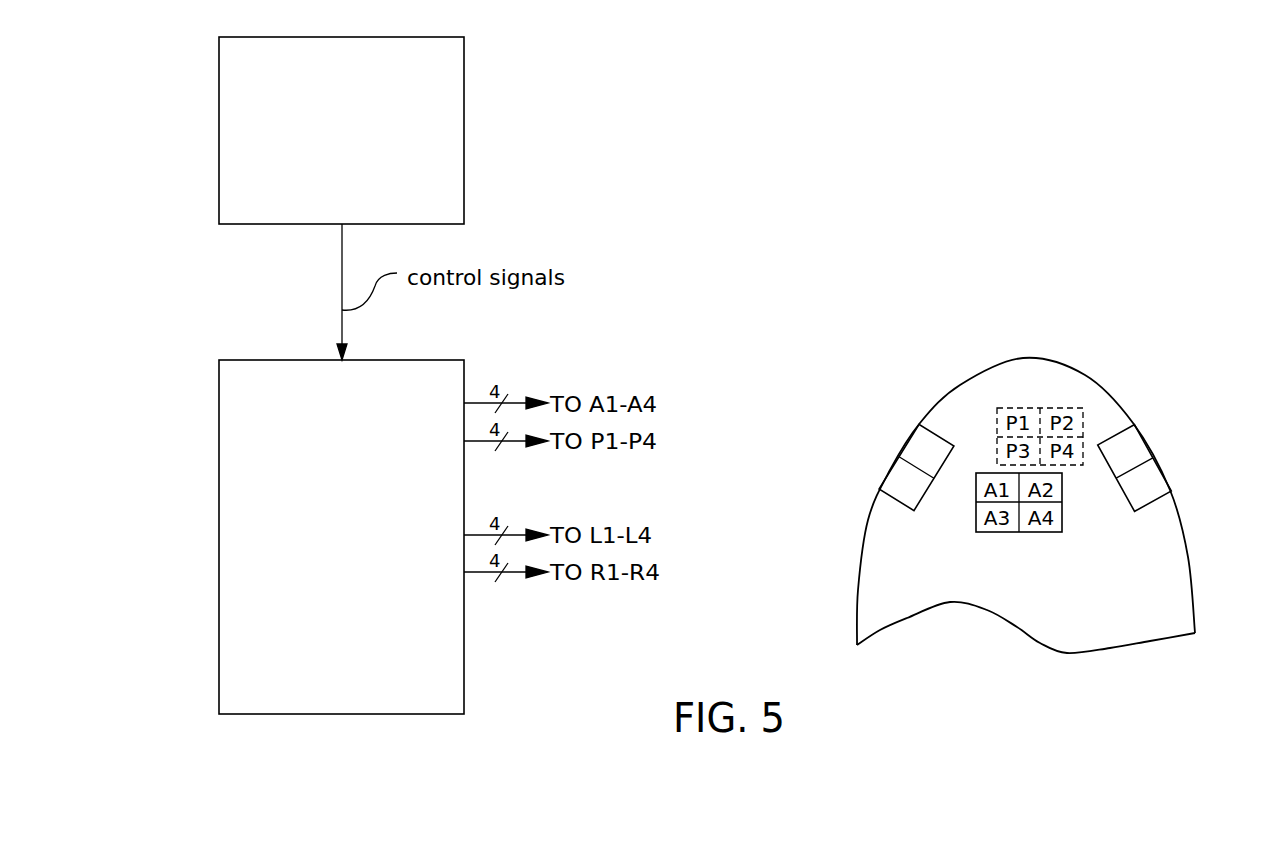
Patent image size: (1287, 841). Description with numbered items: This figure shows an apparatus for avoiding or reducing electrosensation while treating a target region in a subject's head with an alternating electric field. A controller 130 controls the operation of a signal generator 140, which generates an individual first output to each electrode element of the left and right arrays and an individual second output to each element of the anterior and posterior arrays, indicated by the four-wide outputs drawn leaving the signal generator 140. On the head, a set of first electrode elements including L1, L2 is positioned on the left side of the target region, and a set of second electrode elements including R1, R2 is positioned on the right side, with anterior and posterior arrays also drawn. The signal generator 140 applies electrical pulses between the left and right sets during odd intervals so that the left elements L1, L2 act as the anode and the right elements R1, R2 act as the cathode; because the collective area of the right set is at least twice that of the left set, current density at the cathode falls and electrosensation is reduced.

The controller 130 is at (218, 130).
The signal generator 140 is at (217, 543).
The second electrode element R1 is at (903, 437).
The second electrode element R2 is at (888, 462).
The first electrode element L1 is at (1148, 433).
The first electrode element L2 is at (1162, 463).